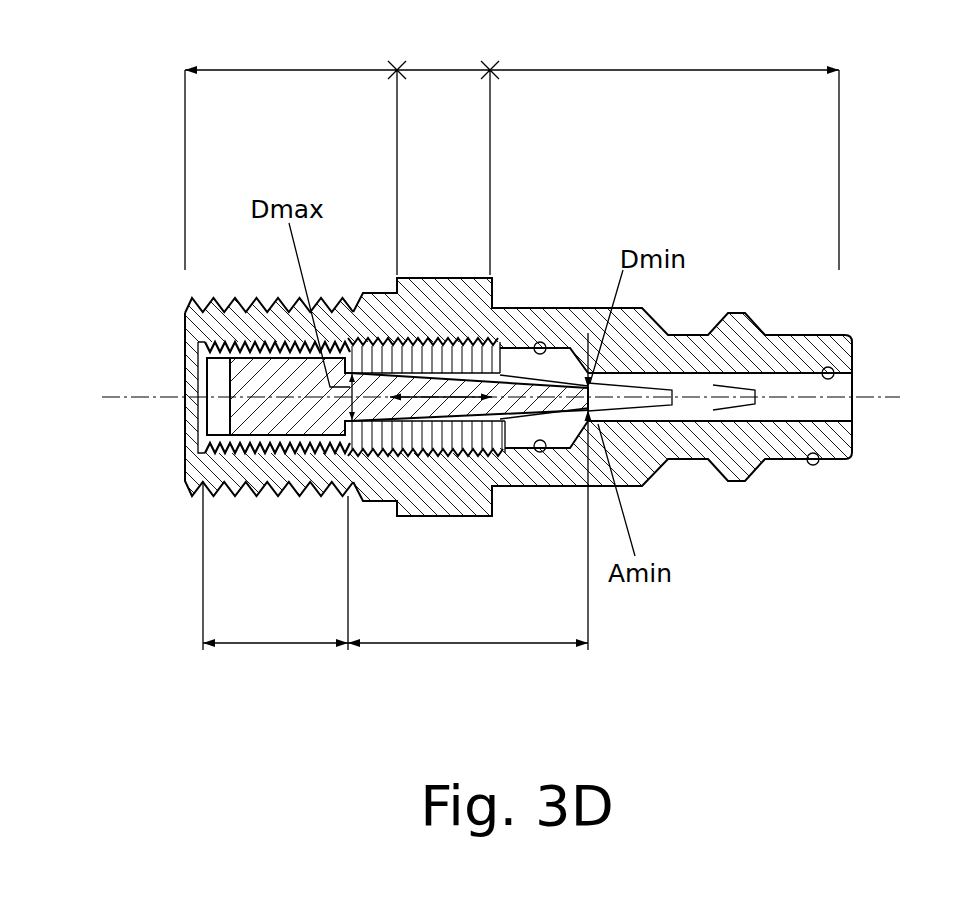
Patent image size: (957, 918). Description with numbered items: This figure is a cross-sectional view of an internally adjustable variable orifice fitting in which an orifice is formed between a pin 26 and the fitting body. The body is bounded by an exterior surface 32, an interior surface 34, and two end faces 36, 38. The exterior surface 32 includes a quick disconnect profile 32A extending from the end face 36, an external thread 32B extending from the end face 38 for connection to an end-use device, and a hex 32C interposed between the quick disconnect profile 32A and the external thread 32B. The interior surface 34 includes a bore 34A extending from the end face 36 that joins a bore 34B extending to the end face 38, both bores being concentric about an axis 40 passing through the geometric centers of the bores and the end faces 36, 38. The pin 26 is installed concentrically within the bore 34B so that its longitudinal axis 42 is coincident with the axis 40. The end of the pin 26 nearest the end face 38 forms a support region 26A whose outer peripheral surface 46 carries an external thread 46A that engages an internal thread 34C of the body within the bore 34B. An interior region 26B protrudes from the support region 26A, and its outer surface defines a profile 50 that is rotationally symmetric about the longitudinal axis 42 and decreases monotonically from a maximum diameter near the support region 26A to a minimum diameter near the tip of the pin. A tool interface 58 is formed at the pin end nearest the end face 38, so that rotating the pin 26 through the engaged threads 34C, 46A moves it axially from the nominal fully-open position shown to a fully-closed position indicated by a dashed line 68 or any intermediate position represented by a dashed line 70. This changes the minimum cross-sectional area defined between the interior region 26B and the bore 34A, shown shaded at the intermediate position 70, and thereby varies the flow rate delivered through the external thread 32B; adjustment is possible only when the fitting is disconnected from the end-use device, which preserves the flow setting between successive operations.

The pin 26 is at (243, 375).
The support region 26A is at (275, 584).
The interior region 26B is at (468, 510).
The exterior surface 32 is at (522, 308).
The quick disconnect profile 32A is at (664, 150).
The external thread 32B is at (295, 152).
The hex 32C is at (448, 152).
The interior surface 34 is at (533, 443).
The bore 34A is at (843, 375).
The bore 34B is at (548, 345).
The internal thread 34C is at (382, 338).
The end face 36 is at (852, 447).
The end face 38 is at (185, 482).
The axis 40 is at (478, 345).
The longitudinal axis 42 is at (105, 390).
The outer peripheral surface 46 is at (277, 464).
The external thread 46A is at (282, 455).
The profile 50 is at (438, 375).
The tool interface 58 is at (217, 425).
The dashed line 68 is at (743, 387).
The dashed line 70 is at (657, 387).